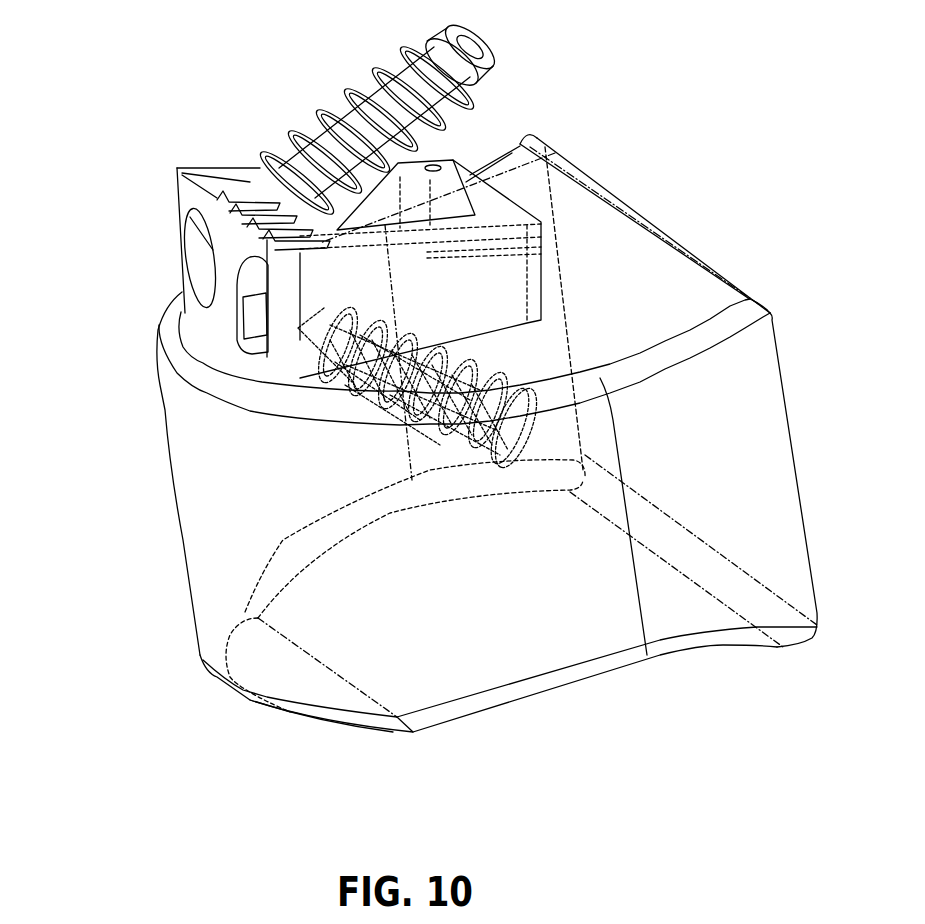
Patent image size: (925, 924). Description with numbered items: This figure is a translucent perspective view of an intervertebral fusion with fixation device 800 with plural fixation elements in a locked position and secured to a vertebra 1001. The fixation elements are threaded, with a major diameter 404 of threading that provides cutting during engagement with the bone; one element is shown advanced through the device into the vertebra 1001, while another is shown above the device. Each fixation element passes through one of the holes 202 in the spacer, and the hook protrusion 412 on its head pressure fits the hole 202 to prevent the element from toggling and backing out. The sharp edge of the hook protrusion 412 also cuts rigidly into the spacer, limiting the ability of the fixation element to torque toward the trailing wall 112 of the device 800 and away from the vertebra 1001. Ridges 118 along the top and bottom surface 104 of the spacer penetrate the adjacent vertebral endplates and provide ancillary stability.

The bottom surface 104 is at (530, 321).
The vertebra 1001 is at (297, 493).
The hook protrusion 412 is at (347, 400).
The intervertebral fusion with fixation device 800 is at (288, 266).
The ridges 118 is at (177, 167).
The trailing wall 112 is at (178, 196).
The holes 202 is at (250, 253).
The major diameter 404 is at (375, 65).